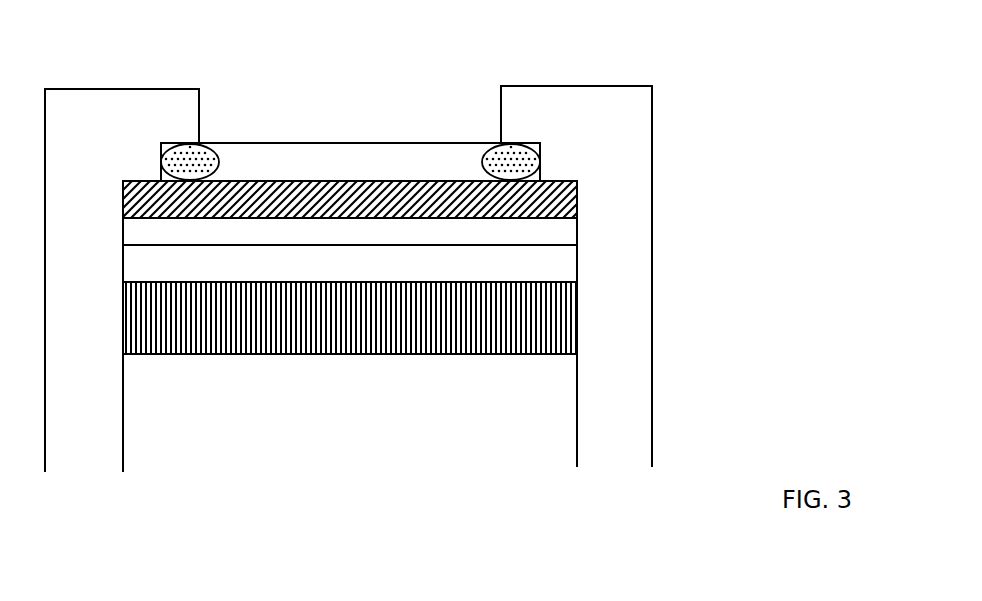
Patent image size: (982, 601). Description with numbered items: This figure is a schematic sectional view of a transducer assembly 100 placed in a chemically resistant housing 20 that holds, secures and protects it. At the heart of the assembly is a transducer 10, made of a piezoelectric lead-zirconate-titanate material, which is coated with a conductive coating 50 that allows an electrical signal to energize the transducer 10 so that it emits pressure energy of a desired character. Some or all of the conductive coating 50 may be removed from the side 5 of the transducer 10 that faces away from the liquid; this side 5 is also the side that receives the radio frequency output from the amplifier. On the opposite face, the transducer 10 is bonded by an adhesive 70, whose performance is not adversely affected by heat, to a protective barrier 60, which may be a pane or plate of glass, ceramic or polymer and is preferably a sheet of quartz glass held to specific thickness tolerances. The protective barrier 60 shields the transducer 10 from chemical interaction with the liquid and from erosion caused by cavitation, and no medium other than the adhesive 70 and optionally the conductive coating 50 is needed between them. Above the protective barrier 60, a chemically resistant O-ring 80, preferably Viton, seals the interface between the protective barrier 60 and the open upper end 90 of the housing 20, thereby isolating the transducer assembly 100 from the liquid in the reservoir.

The transducer assembly 100 is at (293, 374).
The side 5 is at (520, 355).
The transducer 10 is at (557, 303).
The conductive coating 50 is at (557, 260).
The adhesive 70 is at (557, 232).
The protective barrier 60 is at (577, 199).
The open upper end 90 is at (330, 124).
The O-ring 80 is at (538, 152).
The housing 20 is at (612, 413).